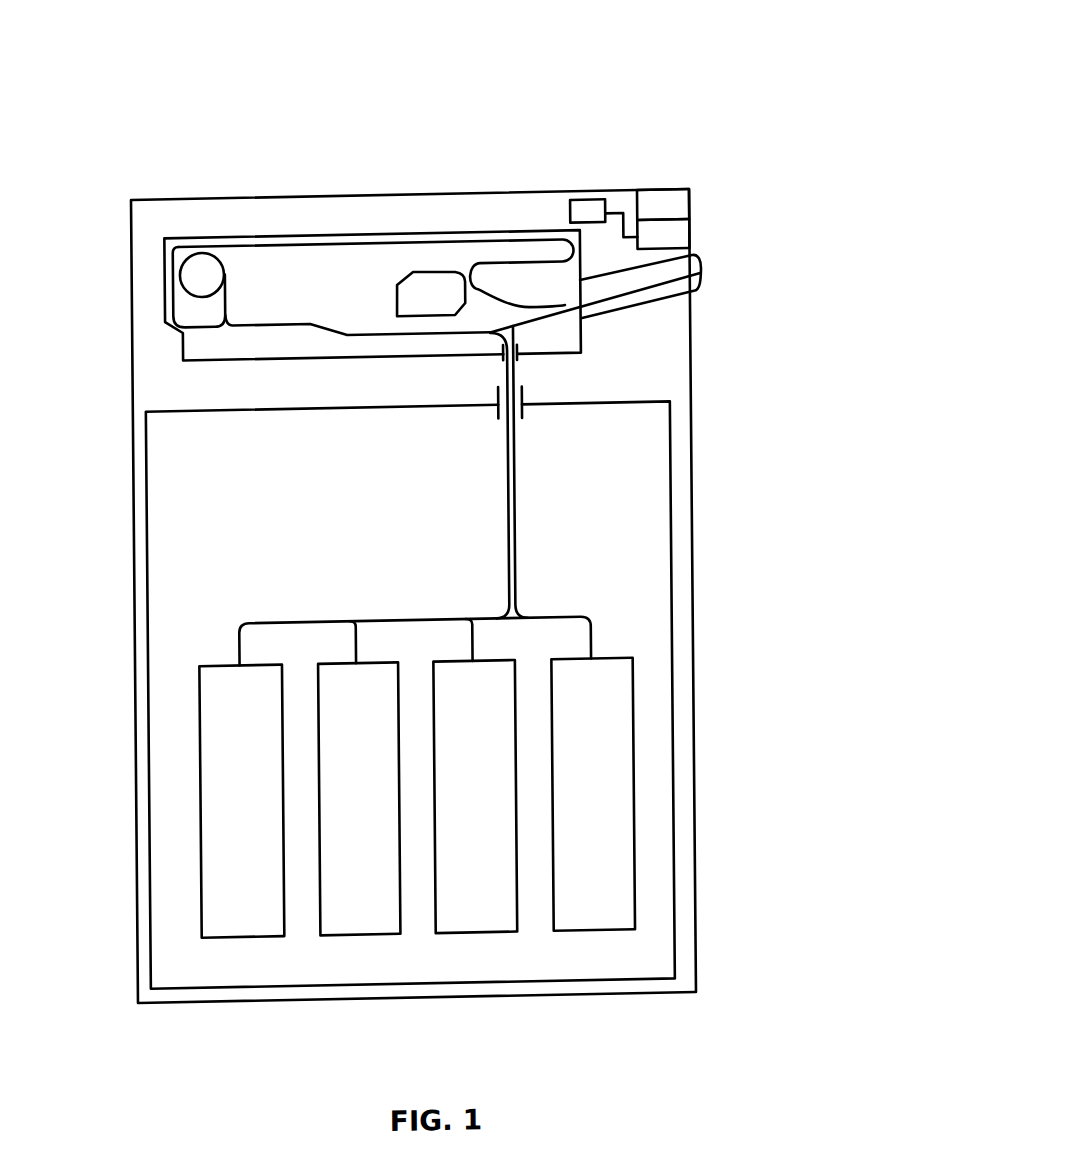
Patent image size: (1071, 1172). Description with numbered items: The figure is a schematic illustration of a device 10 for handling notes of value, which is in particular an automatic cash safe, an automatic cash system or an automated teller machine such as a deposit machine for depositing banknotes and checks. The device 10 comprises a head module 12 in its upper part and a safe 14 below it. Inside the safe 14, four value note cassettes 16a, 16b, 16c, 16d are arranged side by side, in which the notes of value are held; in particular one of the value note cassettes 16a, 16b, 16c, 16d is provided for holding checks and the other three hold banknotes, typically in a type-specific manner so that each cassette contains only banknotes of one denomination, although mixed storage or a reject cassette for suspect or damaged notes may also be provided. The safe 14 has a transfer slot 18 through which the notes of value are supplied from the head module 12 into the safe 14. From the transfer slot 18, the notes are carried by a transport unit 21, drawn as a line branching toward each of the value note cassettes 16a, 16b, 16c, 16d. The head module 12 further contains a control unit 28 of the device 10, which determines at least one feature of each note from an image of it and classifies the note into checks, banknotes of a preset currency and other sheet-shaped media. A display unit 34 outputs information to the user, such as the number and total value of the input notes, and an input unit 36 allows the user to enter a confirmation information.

The device for handling notes of value 10 is at (412, 503).
The head module 12 is at (432, 217).
The safe 14 is at (370, 695).
The value note cassette 16a is at (558, 866).
The value note cassette 16b is at (444, 869).
The value note cassette 16c is at (326, 872).
The value note cassette 16d is at (91, 722).
The transfer slot 18 is at (625, 371).
The transport unit 21 is at (381, 374).
The control unit 28 is at (585, 178).
The display unit 34 is at (678, 170).
The input unit 36 is at (696, 226).